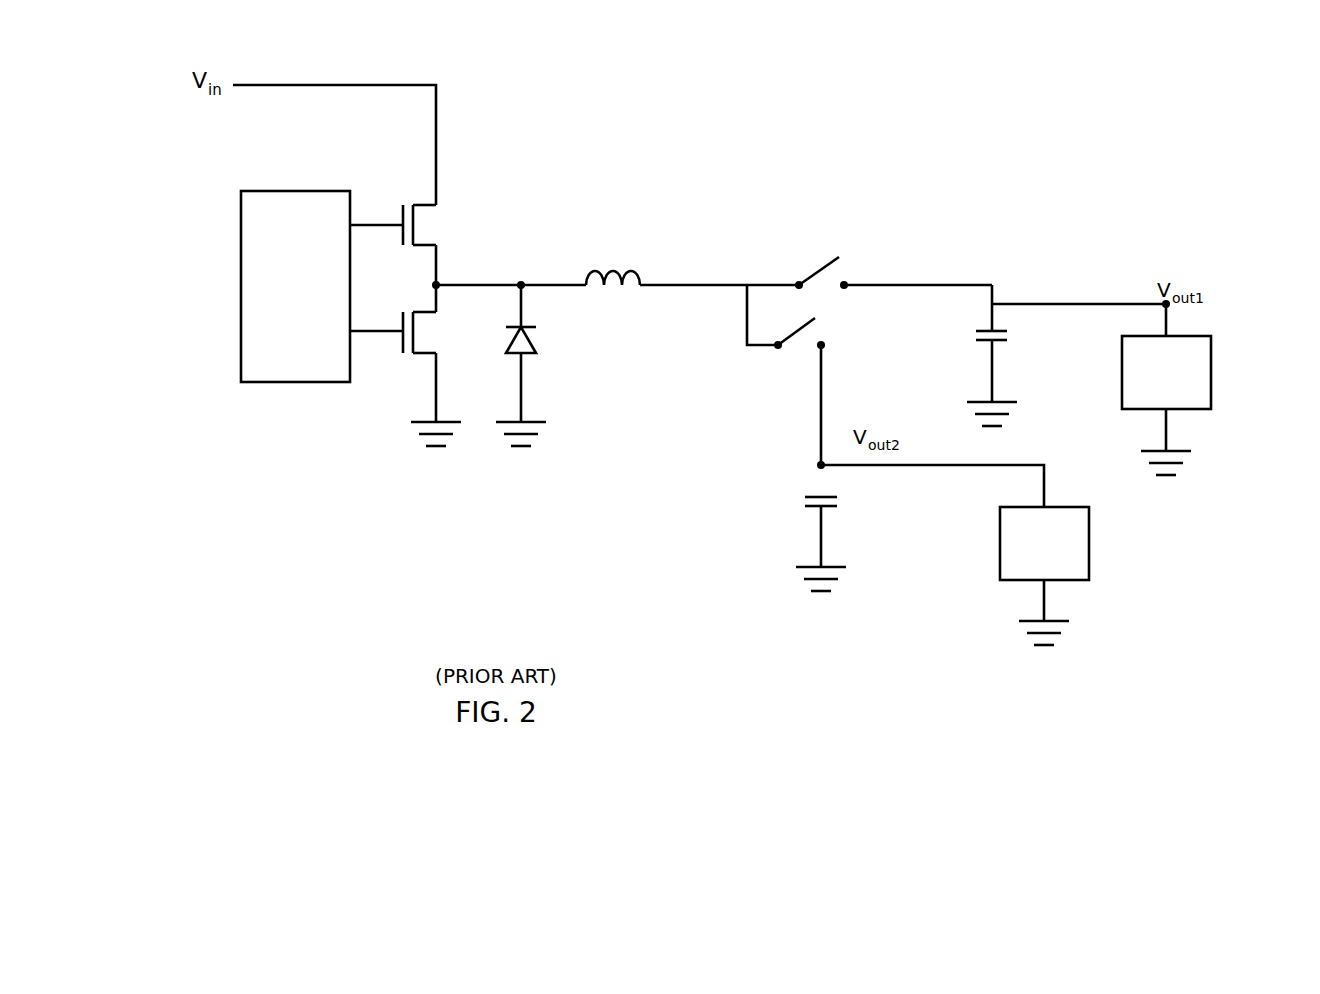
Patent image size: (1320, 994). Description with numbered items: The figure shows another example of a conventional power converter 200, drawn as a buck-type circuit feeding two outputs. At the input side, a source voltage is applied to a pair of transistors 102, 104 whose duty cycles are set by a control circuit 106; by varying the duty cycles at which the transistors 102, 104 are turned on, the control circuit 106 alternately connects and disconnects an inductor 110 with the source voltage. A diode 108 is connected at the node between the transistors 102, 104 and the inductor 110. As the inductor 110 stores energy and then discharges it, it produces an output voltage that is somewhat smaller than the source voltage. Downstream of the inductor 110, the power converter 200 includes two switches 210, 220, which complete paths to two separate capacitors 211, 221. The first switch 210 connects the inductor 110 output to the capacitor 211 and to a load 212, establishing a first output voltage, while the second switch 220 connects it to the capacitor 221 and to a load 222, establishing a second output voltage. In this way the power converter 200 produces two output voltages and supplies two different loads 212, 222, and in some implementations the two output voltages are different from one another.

The power converter 200 is at (957, 77).
The transistor 102 is at (422, 245).
The transistor 104 is at (422, 352).
The control circuit 106 is at (280, 191).
The diode 108 is at (521, 327).
The inductor 110 is at (612, 268).
The switch 210 is at (820, 265).
The capacitor 211 is at (986, 330).
The load 212 is at (1212, 342).
The switch 220 is at (790, 338).
The capacitor 221 is at (815, 496).
The load 222 is at (1090, 512).